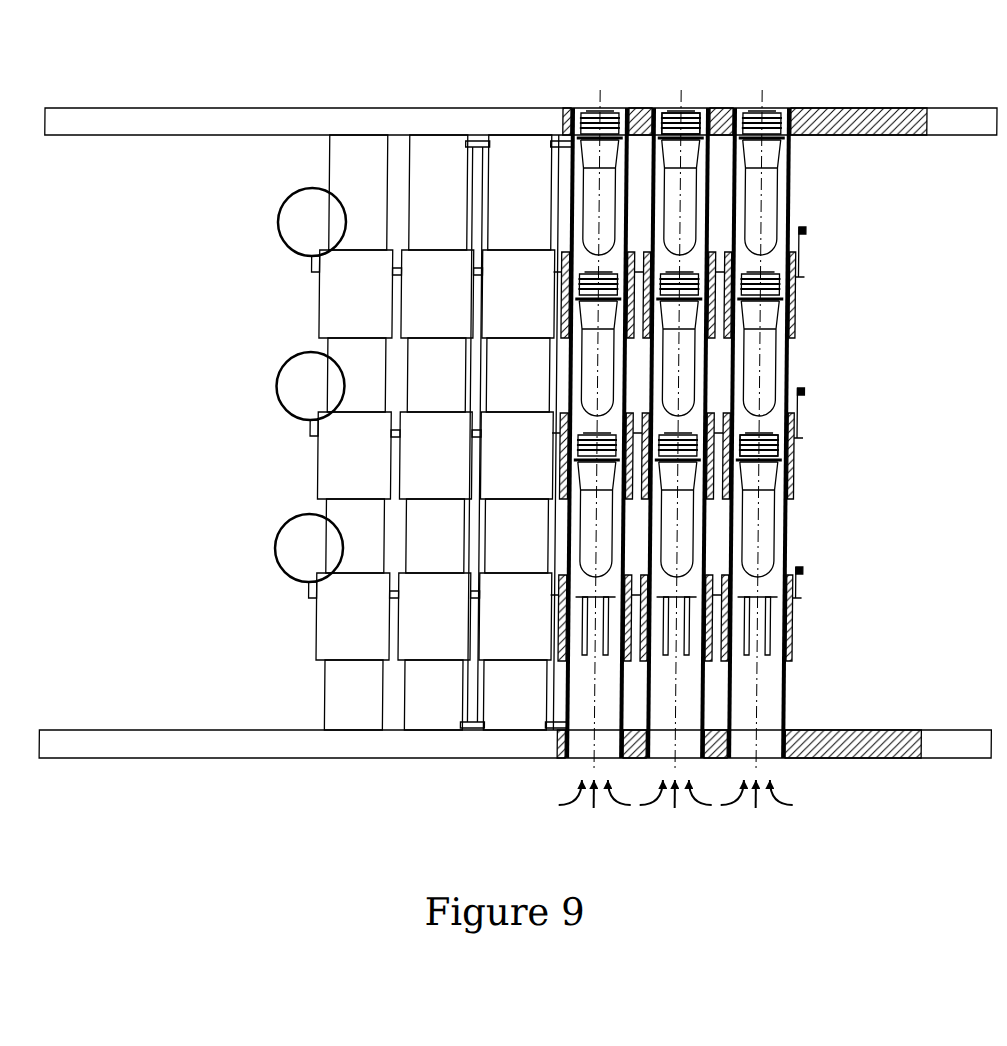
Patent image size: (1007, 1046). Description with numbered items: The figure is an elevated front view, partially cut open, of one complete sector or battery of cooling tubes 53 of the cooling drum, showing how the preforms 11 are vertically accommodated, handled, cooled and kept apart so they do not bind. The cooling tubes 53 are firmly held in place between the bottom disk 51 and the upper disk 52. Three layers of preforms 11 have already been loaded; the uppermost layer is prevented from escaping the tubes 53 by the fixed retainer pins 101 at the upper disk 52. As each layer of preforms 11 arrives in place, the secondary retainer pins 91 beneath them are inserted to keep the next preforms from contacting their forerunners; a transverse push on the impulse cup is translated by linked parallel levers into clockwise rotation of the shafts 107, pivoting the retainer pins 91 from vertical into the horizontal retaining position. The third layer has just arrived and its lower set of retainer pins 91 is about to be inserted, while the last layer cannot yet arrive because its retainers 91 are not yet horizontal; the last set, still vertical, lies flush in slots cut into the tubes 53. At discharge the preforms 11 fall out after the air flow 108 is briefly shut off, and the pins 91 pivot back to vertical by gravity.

The upper disk 52 is at (905, 120).
The bottom disk 51 is at (832, 730).
The cooling tubes 53 is at (799, 333).
The preforms 11 is at (768, 215).
The fixed retainer pins 101 is at (696, 108).
The secondary retainer pins 91 is at (748, 441).
The shafts 107 is at (807, 598).
The air flow 108 is at (691, 813).